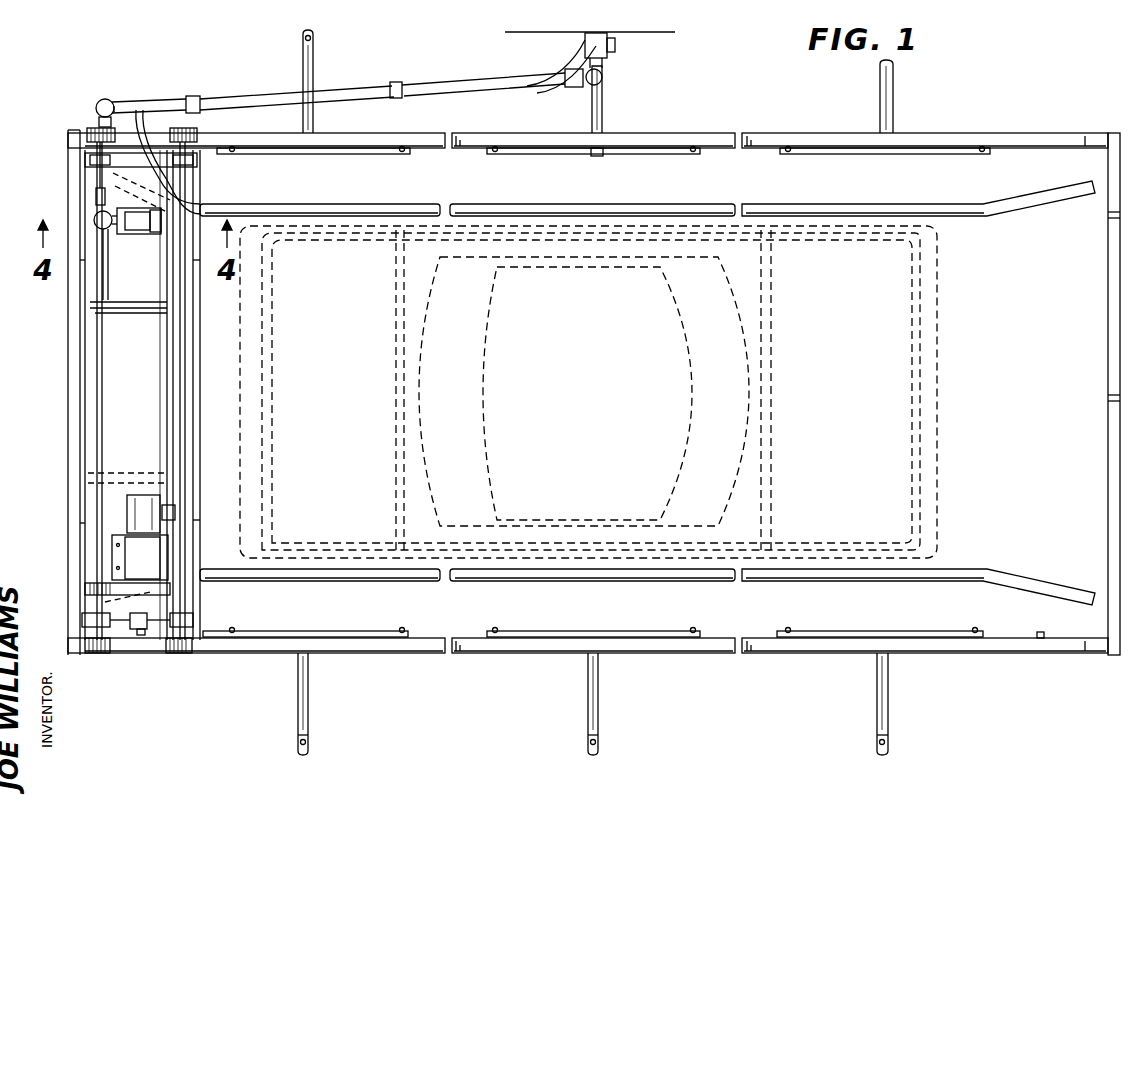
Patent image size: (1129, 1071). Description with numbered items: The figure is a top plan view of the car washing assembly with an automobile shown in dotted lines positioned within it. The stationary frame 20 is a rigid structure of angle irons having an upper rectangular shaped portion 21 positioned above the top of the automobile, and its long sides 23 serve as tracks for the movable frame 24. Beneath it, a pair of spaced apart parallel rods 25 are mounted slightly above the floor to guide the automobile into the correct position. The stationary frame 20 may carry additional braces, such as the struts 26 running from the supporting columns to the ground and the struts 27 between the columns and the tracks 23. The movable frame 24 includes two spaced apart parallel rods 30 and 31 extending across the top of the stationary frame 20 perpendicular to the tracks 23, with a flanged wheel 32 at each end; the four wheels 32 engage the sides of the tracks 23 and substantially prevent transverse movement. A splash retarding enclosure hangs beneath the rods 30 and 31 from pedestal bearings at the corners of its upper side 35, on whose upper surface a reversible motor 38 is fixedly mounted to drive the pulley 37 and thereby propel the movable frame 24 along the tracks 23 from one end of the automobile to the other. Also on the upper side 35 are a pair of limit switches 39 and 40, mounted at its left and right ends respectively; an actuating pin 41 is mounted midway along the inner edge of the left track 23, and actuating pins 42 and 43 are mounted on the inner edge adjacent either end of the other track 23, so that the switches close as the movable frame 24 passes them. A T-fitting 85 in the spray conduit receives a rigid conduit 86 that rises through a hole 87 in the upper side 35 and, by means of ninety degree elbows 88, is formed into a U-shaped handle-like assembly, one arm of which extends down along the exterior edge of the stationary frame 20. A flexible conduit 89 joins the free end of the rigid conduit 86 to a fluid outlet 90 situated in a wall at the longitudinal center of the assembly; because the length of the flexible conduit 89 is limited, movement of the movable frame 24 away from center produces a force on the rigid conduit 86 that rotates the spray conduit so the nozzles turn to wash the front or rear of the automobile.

The stationary frame 20 is at (688, 128).
The upper rectangular shaped portion 21 is at (726, 133).
The long sides 23 is at (646, 140).
The movable frame 24 is at (80, 401).
The parallel rods 25 is at (683, 210).
The struts 26 is at (304, 73).
The struts 27 is at (298, 154).
The rod 30 is at (186, 421).
The rod 31 is at (97, 418).
The wheels 32 is at (86, 136).
The upper side 35 is at (160, 385).
The pulley 37 is at (90, 586).
The reversible motor 38 is at (146, 496).
The limit switch 39 is at (96, 181).
The limit switch 40 is at (134, 630).
The actuating pin 41 is at (597, 157).
The actuating pin 42 is at (143, 635).
The actuating pin 43 is at (1037, 636).
The T-fitting 85 is at (158, 234).
The rigid conduit 86 is at (137, 106).
The hole 87 is at (130, 236).
The 90° elbows 88 is at (100, 103).
The flexible conduit 89 is at (394, 82).
The fluid outlet 90 is at (601, 34).